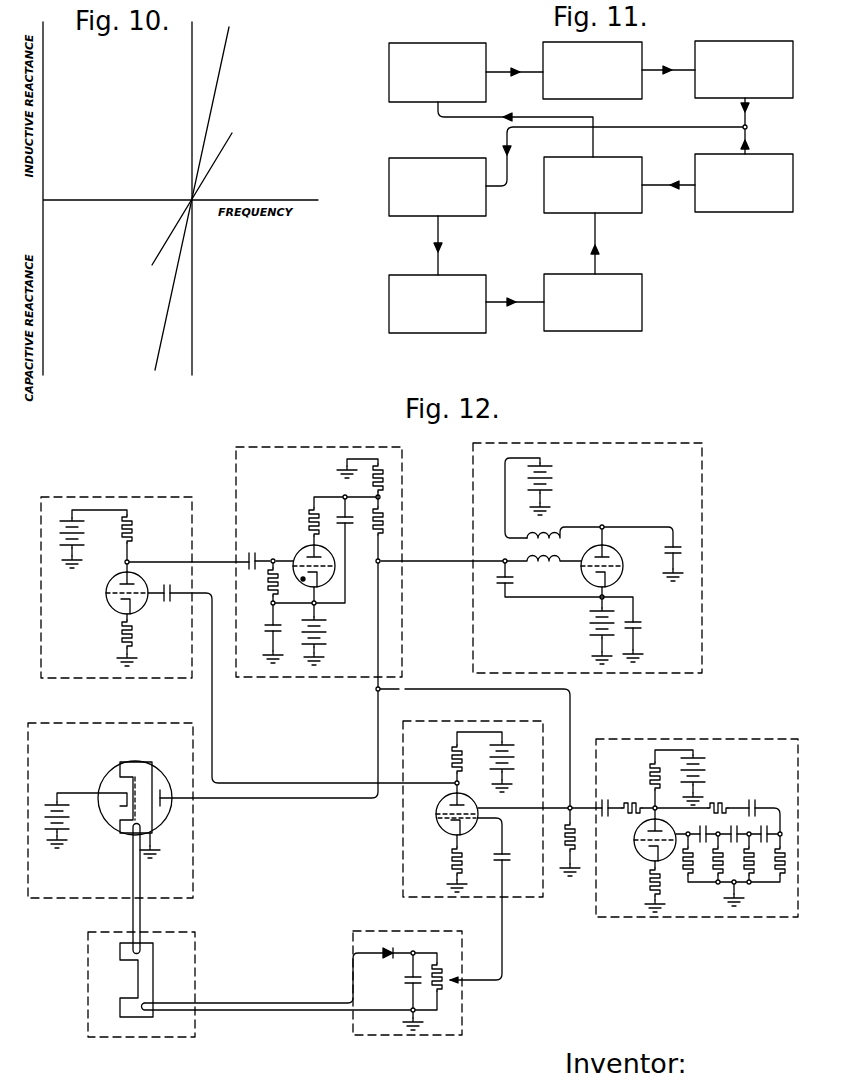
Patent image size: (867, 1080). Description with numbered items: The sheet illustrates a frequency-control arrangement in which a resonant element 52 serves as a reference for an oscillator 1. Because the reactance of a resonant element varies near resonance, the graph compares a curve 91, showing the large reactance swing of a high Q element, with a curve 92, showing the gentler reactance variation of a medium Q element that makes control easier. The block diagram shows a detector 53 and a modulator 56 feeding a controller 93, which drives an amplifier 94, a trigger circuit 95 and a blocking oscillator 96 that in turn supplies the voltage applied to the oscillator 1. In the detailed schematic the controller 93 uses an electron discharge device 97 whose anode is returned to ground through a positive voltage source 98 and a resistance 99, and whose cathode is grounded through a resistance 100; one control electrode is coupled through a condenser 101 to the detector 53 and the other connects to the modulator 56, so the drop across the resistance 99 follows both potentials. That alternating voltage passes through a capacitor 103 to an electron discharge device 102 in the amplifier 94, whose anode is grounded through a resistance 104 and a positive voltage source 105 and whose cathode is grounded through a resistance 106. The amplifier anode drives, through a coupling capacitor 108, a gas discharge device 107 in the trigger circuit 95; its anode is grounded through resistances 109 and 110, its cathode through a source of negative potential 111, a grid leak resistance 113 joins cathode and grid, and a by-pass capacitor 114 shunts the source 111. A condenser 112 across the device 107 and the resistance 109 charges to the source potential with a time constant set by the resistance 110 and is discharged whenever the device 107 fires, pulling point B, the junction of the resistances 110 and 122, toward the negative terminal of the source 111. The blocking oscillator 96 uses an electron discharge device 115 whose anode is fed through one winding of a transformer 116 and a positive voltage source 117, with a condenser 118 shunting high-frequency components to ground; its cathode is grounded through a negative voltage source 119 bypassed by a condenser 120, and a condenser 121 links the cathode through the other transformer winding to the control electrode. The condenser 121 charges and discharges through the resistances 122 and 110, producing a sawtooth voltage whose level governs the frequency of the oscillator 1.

In FIG. 11, the oscillator 1 is at (447, 157).
In FIG. 12, the oscillator 1 is at (193, 852).
In FIG. 11, the resonant element 52 is at (469, 275).
In FIG. 12, the resonant element 52 is at (195, 967).
In FIG. 11, the detector 53 is at (625, 274).
In FIG. 12, the detector 53 is at (353, 961).
In FIG. 11, the modulator 56 is at (695, 165).
In FIG. 12, the modulator 56 is at (772, 739).
In FIG. 10, the curve 91 is at (217, 85).
In FIG. 10, the curve 92 is at (210, 170).
In FIG. 11, the controller 93 is at (544, 201).
In FIG. 12, the controller 93 is at (403, 845).
In FIG. 11, the amplifier 94 is at (438, 43).
In FIG. 12, the amplifier 94 is at (192, 518).
In FIG. 11, the trigger circuit 95 is at (543, 53).
In FIG. 12, the trigger circuit 95 is at (402, 481).
In FIG. 11, the blocking oscillator 96 is at (741, 41).
In FIG. 12, the blocking oscillator 96 is at (702, 489).
In FIG. 12, the electron discharge device 97 is at (472, 801).
In FIG. 12, the positive voltage source 98 is at (498, 757).
In FIG. 12, the resistance 99 is at (449, 747).
In FIG. 12, the resistance 100 is at (450, 862).
In FIG. 12, the condenser 101 is at (497, 857).
In FIG. 12, the electron discharge device 102 is at (106, 593).
In FIG. 12, the capacitor 103 is at (167, 584).
In FIG. 12, the resistance 104 is at (133, 527).
In FIG. 12, the positive voltage source 105 is at (84, 534).
In FIG. 12, the resistance 106 is at (131, 632).
In FIG. 12, the gas discharge device 107 is at (301, 554).
In FIG. 12, the coupling capacitor 108 is at (252, 552).
In FIG. 12, the resistance 109 is at (308, 513).
In FIG. 12, the resistance 110 is at (372, 485).
In FIG. 12, the source of negative potential 111 is at (329, 627).
In FIG. 12, the condenser 112 is at (372, 537).
In FIG. 12, the grid leak resistance 113 is at (268, 594).
In FIG. 12, the by-pass capacitor 114 is at (266, 628).
In FIG. 12, the electron discharge device 115 is at (618, 555).
In FIG. 12, the transformer 116 is at (514, 555).
In FIG. 12, the positive voltage source 117 is at (555, 481).
In FIG. 12, the condenser 118 is at (670, 551).
In FIG. 12, the negative voltage source 119 is at (588, 623).
In FIG. 12, the condenser 120 is at (644, 624).
In FIG. 12, the condenser 121 is at (513, 582).
In FIG. 12, the resistance 122 is at (347, 516).
In FIG. 12, the point B is at (380, 497).